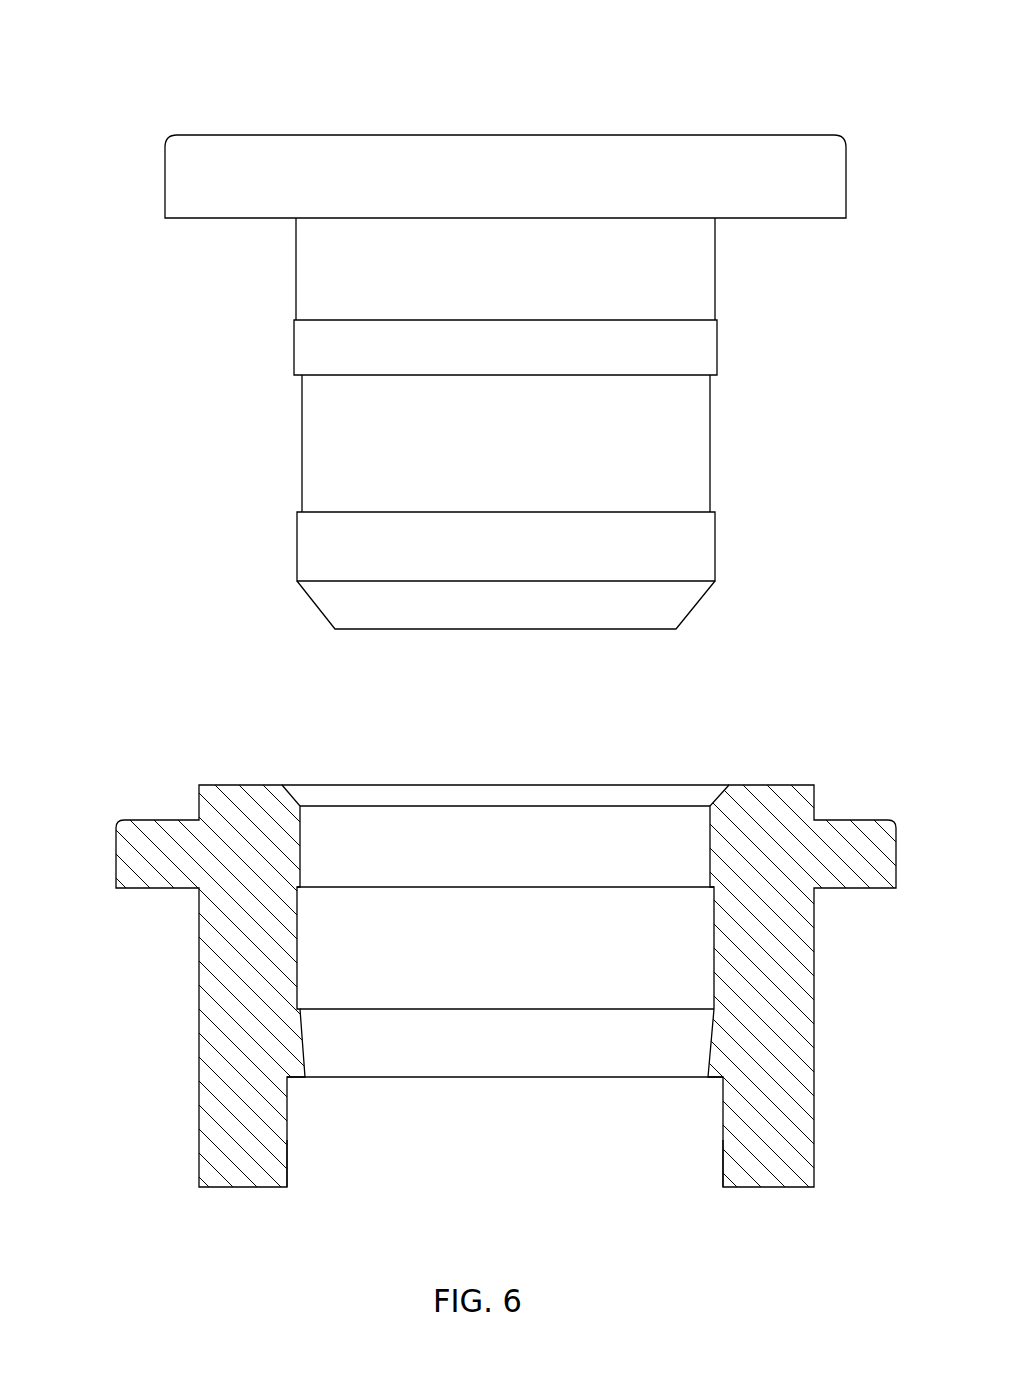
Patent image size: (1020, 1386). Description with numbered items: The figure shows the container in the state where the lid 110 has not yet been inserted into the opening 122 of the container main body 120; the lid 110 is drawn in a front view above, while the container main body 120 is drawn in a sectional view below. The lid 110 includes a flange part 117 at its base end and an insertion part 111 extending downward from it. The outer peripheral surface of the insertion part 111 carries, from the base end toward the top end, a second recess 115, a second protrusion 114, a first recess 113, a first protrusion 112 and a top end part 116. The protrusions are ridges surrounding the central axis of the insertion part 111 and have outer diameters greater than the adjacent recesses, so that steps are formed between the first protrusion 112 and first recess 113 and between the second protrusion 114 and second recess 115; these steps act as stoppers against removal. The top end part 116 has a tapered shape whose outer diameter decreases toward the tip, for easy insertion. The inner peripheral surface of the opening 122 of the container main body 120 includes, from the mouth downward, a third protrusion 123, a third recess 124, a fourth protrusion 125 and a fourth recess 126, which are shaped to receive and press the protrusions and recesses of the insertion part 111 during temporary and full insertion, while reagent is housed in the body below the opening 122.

The lid 110 is at (767, 80).
The insertion part 111 is at (133, 254).
The first protrusion 112 is at (297, 553).
The first recess 113 is at (302, 445).
The second protrusion 114 is at (294, 348).
The second recess 115 is at (296, 275).
The top end part 116 is at (327, 607).
The flange part 117 is at (185, 183).
The container main body 120 is at (770, 747).
The opening 122 is at (564, 930).
The third protrusion 123 is at (300, 850).
The third recess 124 is at (297, 946).
The fourth protrusion 125 is at (304, 1043).
The fourth recess 126 is at (288, 1124).